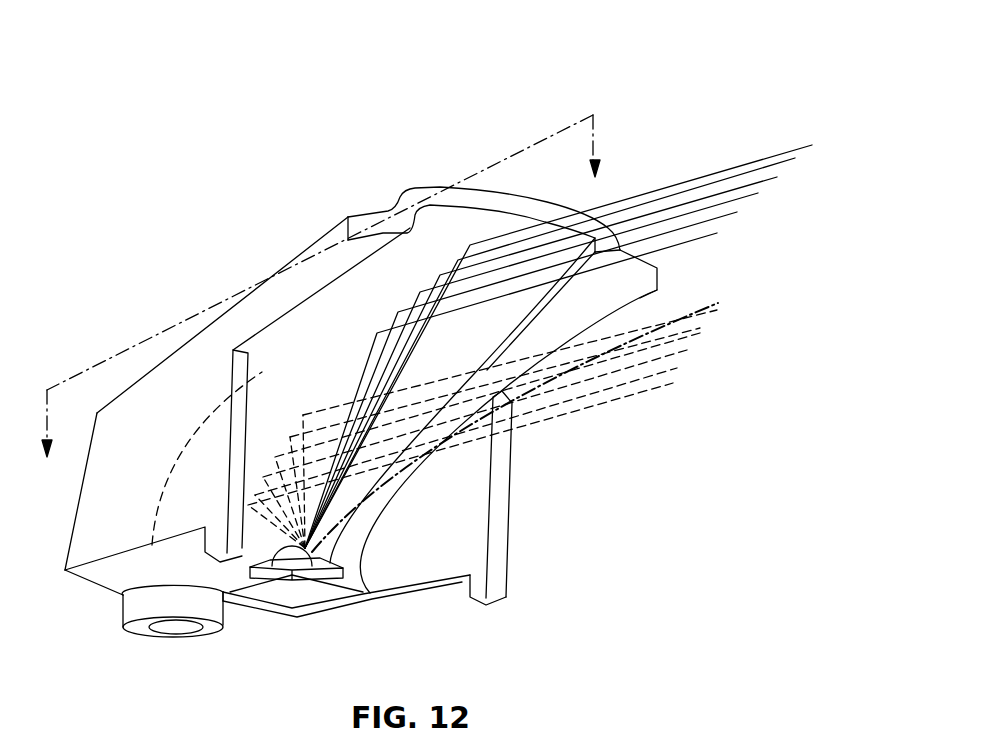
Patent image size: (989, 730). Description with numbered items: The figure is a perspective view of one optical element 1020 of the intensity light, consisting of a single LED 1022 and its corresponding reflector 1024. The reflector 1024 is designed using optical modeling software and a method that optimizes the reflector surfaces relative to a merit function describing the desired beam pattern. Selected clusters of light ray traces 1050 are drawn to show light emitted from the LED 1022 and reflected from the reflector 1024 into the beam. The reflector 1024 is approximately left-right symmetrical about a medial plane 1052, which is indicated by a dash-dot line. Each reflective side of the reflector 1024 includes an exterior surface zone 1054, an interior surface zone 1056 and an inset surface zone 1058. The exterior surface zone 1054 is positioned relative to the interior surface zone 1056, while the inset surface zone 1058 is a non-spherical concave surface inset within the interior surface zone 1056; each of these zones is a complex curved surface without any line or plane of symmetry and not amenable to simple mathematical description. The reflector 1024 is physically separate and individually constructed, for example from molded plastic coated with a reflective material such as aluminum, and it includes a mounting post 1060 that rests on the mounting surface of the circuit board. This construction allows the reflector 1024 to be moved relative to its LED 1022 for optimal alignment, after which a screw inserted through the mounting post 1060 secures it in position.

The optical element 1020 is at (405, 102).
The LED 1022 is at (302, 560).
The reflector 1024 is at (510, 193).
The light ray traces 1050 is at (758, 160).
The medial plane 1052 is at (578, 117).
The exterior surface zone 1054 is at (622, 290).
The interior surface zone 1056 is at (438, 352).
The inset surface zone 1058 is at (252, 475).
The mounting post 1060 is at (132, 605).